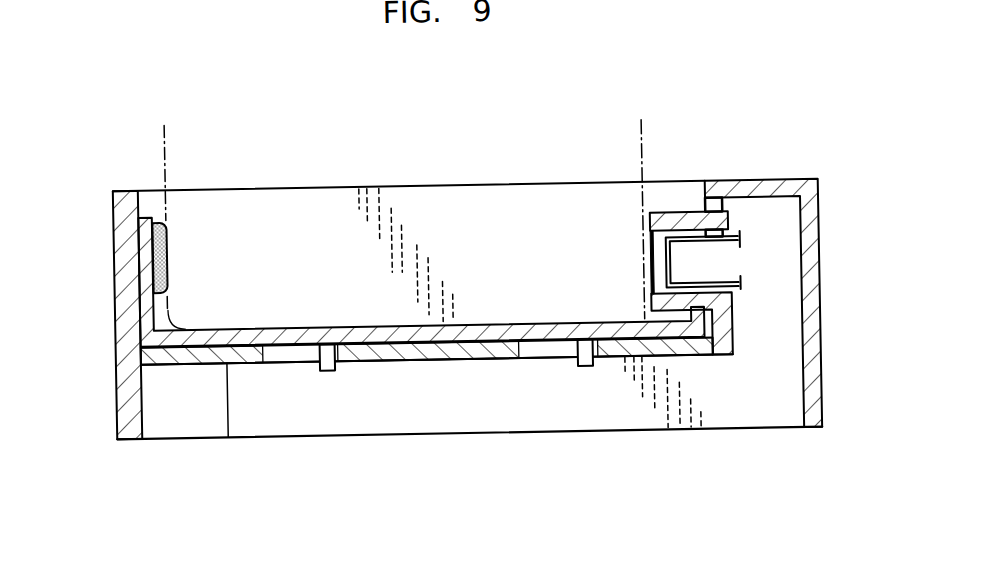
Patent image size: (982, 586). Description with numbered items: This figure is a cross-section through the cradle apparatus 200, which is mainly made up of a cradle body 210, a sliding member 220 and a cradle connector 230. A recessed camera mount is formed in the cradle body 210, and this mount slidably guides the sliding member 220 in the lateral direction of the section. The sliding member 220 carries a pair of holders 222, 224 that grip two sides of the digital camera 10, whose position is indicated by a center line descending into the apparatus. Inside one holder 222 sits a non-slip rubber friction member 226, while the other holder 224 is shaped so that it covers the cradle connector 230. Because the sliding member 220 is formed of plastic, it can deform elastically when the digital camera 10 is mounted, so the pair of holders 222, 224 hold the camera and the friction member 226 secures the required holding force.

The digital camera 10 is at (647, 165).
The cradle apparatus 200 is at (760, 146).
The cradle body 210 is at (766, 185).
The sliding member 220 is at (399, 362).
The holder 222 is at (159, 211).
The holder 224 is at (681, 215).
The friction member 226 is at (170, 243).
The cradle connector 230 is at (694, 287).